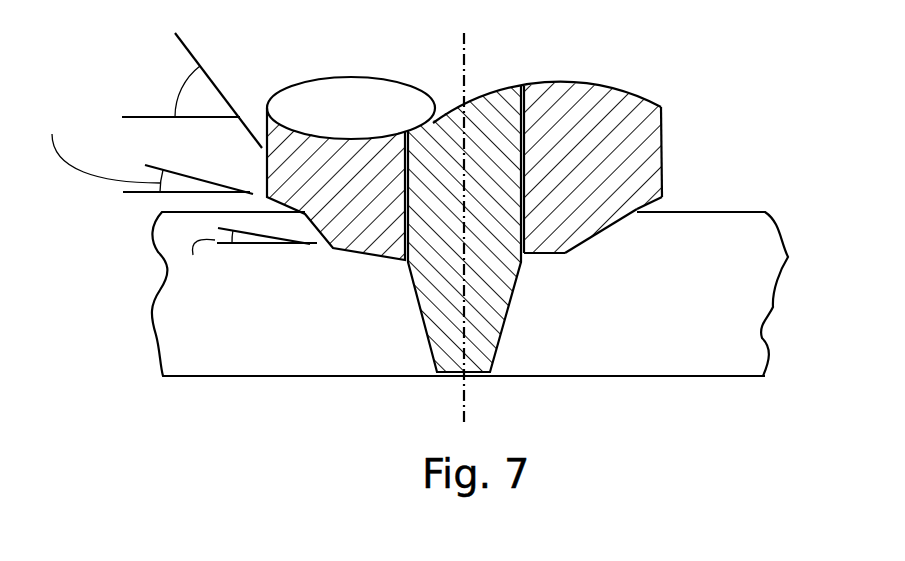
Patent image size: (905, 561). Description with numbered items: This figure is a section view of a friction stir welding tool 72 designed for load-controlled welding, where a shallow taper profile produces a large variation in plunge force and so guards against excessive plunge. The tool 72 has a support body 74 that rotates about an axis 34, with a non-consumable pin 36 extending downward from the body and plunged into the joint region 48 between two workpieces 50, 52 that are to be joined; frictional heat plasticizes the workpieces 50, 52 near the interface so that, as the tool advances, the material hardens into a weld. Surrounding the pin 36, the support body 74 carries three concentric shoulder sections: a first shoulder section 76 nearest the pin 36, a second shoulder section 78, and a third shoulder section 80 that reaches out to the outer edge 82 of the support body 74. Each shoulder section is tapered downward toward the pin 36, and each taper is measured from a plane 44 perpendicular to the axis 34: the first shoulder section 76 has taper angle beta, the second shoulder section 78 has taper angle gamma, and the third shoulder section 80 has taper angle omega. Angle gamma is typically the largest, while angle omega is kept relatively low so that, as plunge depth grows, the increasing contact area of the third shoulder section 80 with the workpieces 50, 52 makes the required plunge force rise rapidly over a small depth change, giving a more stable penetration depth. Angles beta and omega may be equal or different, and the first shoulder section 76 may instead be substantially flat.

The axis 34 is at (467, 48).
The non-consumable pin 36 is at (433, 122).
The plane 44 is at (145, 118).
The joint region 48 is at (466, 376).
The workpiece 50 is at (224, 359).
The workpiece 52 is at (733, 360).
The friction stir welding tool 72 is at (723, 100).
The support body 74 is at (623, 93).
The first shoulder section 76 is at (540, 264).
The second shoulder section 78 is at (609, 239).
The third shoulder section 80 is at (646, 216).
The outer edge 82 is at (672, 150).